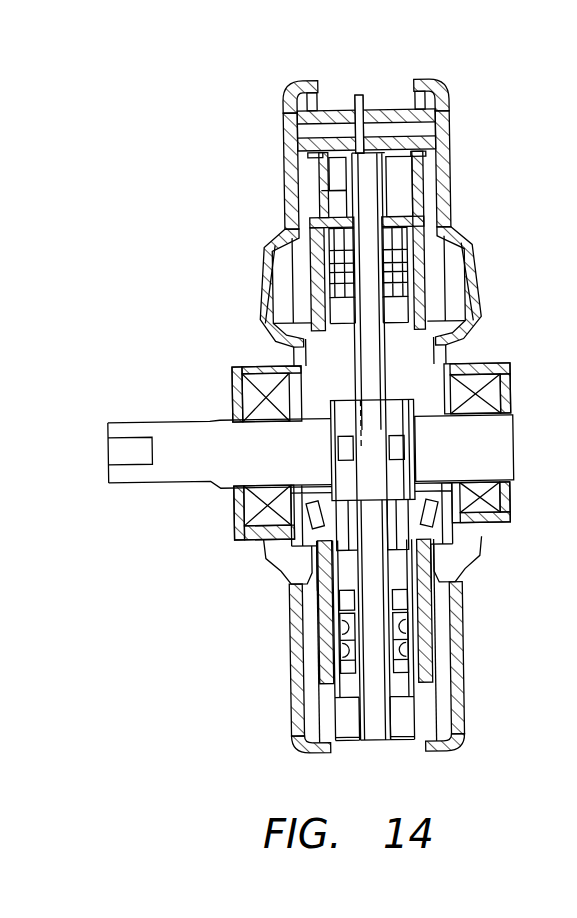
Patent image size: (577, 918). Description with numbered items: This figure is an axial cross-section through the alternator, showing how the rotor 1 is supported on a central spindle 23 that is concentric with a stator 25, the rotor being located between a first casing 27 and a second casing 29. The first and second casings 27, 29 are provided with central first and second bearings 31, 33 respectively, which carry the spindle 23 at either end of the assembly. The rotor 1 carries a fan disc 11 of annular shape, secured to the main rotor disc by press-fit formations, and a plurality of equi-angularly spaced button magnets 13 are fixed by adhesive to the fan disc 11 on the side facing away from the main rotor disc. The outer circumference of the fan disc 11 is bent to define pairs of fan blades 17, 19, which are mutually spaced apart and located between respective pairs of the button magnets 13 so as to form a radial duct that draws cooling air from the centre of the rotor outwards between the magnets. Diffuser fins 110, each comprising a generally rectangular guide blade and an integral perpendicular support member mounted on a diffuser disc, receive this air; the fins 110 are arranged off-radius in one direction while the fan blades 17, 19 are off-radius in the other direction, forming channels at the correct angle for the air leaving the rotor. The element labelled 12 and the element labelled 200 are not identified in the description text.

The rotor 1 is at (292, 340).
The fan disc 11 is at (437, 712).
The pin 12 is at (333, 112).
The button magnets 13 is at (386, 110).
The fan blade 17 is at (343, 250).
The fan blade 19 is at (397, 247).
The central spindle 23 is at (128, 474).
The stator 25 is at (377, 727).
The first casing 27 is at (292, 657).
The second casing 29 is at (458, 647).
The first bearing 31 is at (243, 507).
The second bearing 33 is at (480, 508).
The diffuser fin 110 is at (323, 207).
The bearing 200 is at (240, 396).